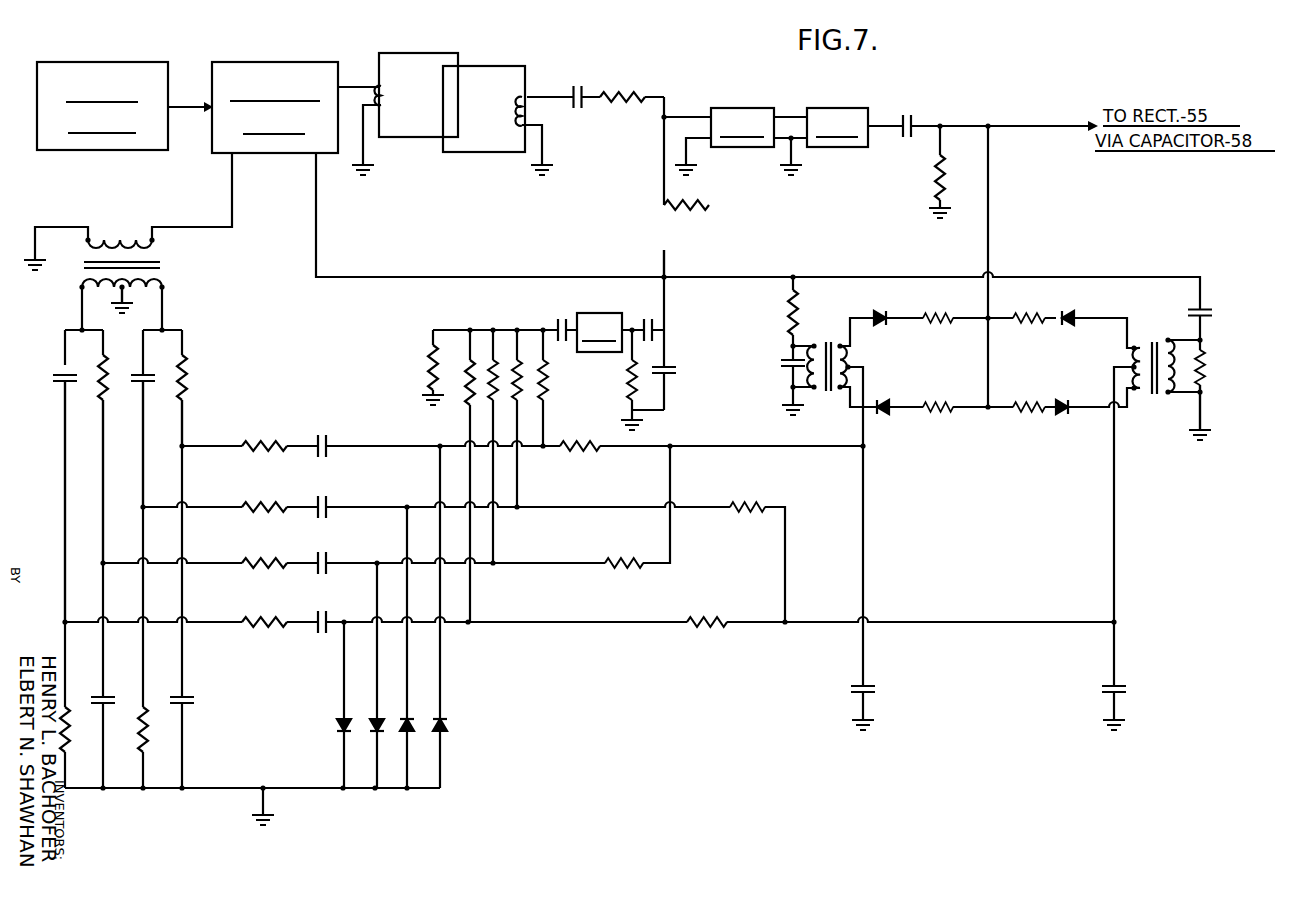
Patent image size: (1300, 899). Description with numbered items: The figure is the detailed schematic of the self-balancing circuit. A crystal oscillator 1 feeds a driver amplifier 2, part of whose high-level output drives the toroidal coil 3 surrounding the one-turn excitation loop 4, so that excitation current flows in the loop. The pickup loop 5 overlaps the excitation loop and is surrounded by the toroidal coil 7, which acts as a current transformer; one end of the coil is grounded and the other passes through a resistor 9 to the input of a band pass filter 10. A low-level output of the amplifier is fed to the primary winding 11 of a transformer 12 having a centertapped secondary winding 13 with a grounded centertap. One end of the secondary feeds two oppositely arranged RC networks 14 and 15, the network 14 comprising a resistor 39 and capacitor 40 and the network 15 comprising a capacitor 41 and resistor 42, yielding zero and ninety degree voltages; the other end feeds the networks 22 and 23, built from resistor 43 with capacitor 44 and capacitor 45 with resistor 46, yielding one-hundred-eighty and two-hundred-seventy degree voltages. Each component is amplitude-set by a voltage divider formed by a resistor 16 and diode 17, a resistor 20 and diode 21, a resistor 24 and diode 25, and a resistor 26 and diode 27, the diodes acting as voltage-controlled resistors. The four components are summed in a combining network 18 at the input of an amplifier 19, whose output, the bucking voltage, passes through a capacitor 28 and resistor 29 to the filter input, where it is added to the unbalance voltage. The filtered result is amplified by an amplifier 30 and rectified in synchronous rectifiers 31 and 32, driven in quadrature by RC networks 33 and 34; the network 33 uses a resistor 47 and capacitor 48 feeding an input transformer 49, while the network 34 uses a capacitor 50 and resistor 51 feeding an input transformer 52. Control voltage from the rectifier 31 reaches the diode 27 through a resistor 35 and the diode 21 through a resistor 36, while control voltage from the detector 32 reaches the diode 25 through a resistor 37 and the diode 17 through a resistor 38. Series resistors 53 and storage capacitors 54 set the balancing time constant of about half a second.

The crystal oscillator 1 is at (102, 62).
The driver amplifier 2 is at (275, 62).
The toroidal coil 3 is at (388, 100).
The excitation loop 4 is at (421, 53).
The pickup loop 5 is at (492, 66).
The toroidal coil 7 is at (517, 101).
The resistor 9 is at (623, 95).
The band pass filter 10 is at (741, 108).
The primary winding 11 is at (120, 236).
The transformer 12 is at (165, 262).
The centertapped secondary winding 13 is at (104, 290).
The RC network 14 is at (63, 500).
The RC network 15 is at (106, 464).
The resistor 16 is at (266, 628).
The diode 17 is at (336, 725).
The combining network 18 is at (462, 324).
The amplifier 19 is at (588, 313).
The resistor 20 is at (260, 558).
The diode 21 is at (372, 718).
The RC network 22 is at (146, 464).
The RC network 23 is at (184, 418).
The resistor 24 is at (262, 502).
The diode 25 is at (404, 718).
The resistor 26 is at (266, 441).
The diode 27 is at (448, 725).
The capacitor 28 is at (648, 318).
The resistor 29 is at (668, 220).
The amplifier 30 is at (838, 108).
The synchronous rectifier 31 is at (914, 368).
The synchronous detector 32 is at (1102, 368).
The RC network 33 is at (1210, 360).
The RC network 34 is at (782, 348).
The resistor 35 is at (583, 452).
The resistor 36 is at (618, 572).
The resistor 37 is at (746, 502).
The resistor 38 is at (702, 618).
The resistor 39 is at (68, 742).
The capacitor 40 is at (60, 372).
The capacitor 41 is at (106, 694).
The resistor 42 is at (100, 388).
The resistor 43 is at (146, 742).
The capacitor 44 is at (140, 372).
The capacitor 45 is at (188, 708).
The resistor 46 is at (186, 378).
The resistor 47 is at (1206, 392).
The capacitor 48 is at (1210, 308).
The input transformer 49 is at (1148, 344).
The capacitor 50 is at (784, 370).
The resistor 51 is at (790, 303).
The input transformer 52 is at (828, 340).
The series resistors 53 is at (942, 402).
The storage capacitors 54 is at (871, 683).